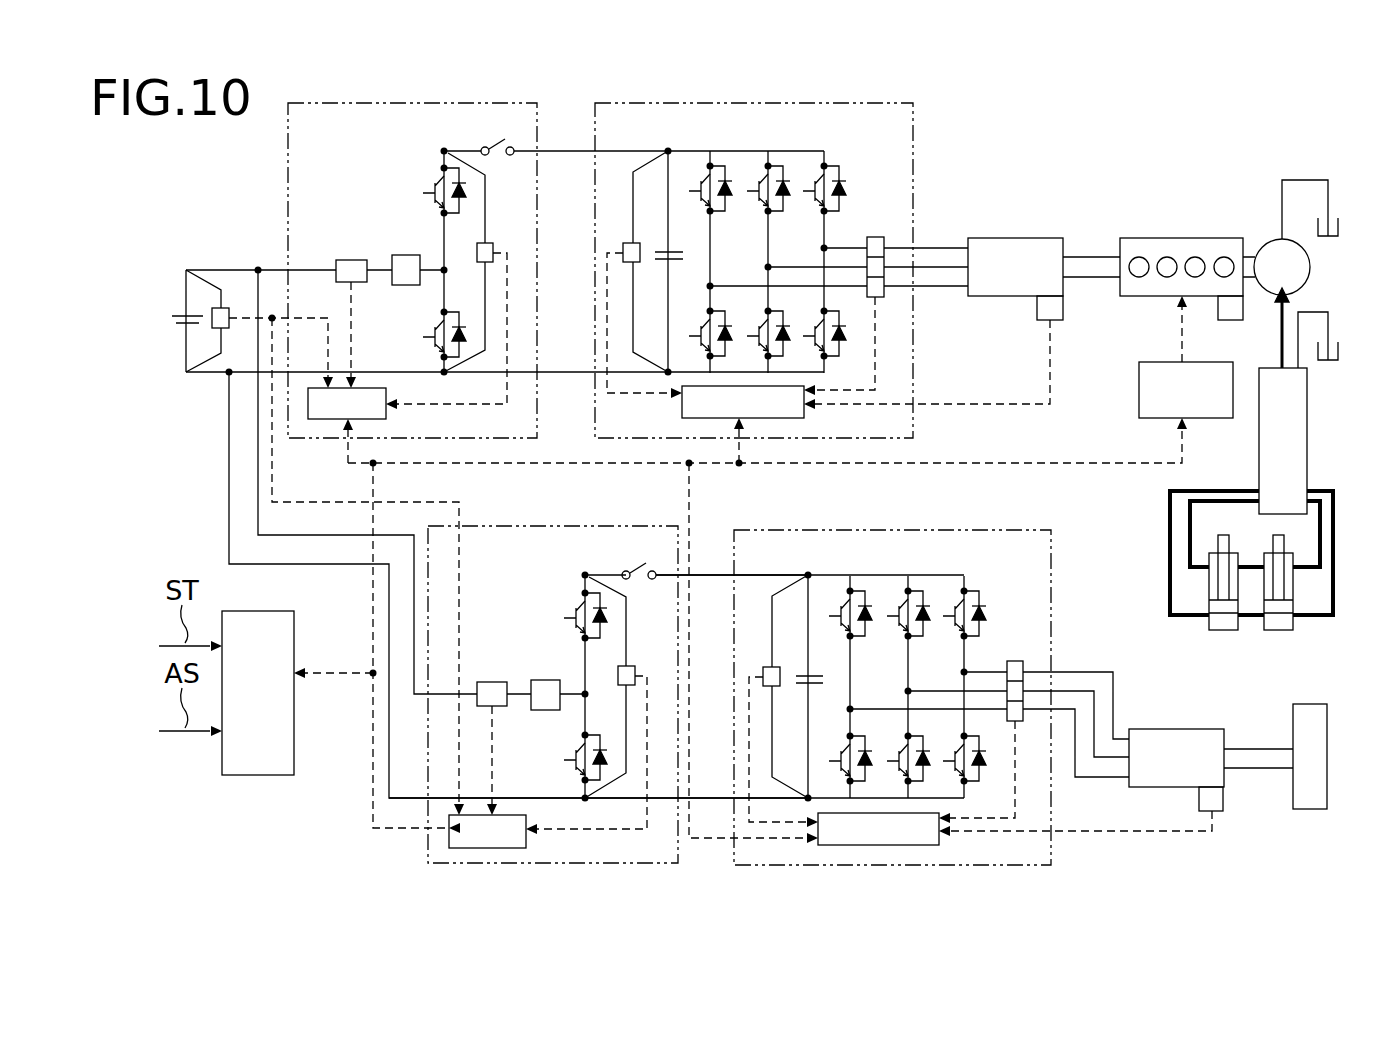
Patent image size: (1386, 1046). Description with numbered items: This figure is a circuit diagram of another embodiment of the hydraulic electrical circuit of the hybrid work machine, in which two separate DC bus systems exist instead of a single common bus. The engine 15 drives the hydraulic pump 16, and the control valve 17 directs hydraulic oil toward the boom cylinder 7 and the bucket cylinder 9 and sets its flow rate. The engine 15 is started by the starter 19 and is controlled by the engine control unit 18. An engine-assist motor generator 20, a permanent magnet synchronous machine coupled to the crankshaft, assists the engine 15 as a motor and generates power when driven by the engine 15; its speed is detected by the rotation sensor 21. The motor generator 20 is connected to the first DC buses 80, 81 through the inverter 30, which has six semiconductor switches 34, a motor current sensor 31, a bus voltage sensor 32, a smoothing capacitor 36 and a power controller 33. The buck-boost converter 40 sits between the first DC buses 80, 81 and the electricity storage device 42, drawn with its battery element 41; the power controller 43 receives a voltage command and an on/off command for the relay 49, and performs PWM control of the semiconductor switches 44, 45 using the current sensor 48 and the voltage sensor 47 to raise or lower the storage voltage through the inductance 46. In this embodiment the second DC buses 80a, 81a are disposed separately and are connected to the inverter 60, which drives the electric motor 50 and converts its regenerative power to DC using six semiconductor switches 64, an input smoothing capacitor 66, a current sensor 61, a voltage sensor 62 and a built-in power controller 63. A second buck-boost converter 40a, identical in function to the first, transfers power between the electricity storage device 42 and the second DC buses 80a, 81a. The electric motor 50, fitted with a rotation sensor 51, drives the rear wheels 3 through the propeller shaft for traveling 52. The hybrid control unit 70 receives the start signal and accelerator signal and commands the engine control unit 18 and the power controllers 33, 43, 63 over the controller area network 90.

The rear wheels 3 is at (1314, 704).
The boom cylinder 7 is at (1209, 603).
The bucket cylinder 9 is at (1293, 603).
The engine 15 is at (1193, 238).
The hydraulic pump 16 is at (1262, 238).
The control valve 17 is at (1307, 473).
The engine control unit 18 is at (1218, 420).
The starter 19 is at (1222, 323).
The motor generator 20 is at (1025, 238).
The rotation sensor 21 is at (1060, 322).
The inverter 30 is at (784, 103).
The motor current sensor 31 is at (874, 236).
The bus voltage sensor 32 is at (628, 240).
The power controller 33 is at (807, 415).
The semiconductor switches 34 is at (842, 170).
The capacitor 36 is at (660, 247).
The buck-boost converter 40 is at (343, 102).
The second buck-boost converter 40a is at (488, 526).
The battery 41 is at (192, 338).
The electricity storage device 42 is at (175, 317).
The power controller 43 is at (328, 420).
The semiconductor switch 44 is at (440, 190).
The semiconductor switch 45 is at (440, 344).
The inductance 46 is at (406, 255).
The voltage sensor 47 is at (490, 242).
The current sensor 48 is at (350, 259).
The relay 49 is at (498, 142).
The electric motor 50 is at (1183, 729).
The rotation sensor 51 is at (1220, 812).
The propeller shaft for traveling 52 is at (1265, 757).
The inverter 60 is at (893, 530).
The current sensor 61 is at (1013, 661).
The voltage sensor 62 is at (768, 666).
The power controller 63 is at (940, 837).
The semiconductor switches 64 is at (973, 594).
The capacitor 66 is at (800, 676).
The hybrid control unit 70 is at (254, 776).
The first DC bus 80 is at (563, 150).
The second DC bus 80a is at (702, 572).
The first DC bus 81 is at (573, 377).
The second DC bus 81a is at (720, 800).
The controller area network 90 is at (1022, 463).